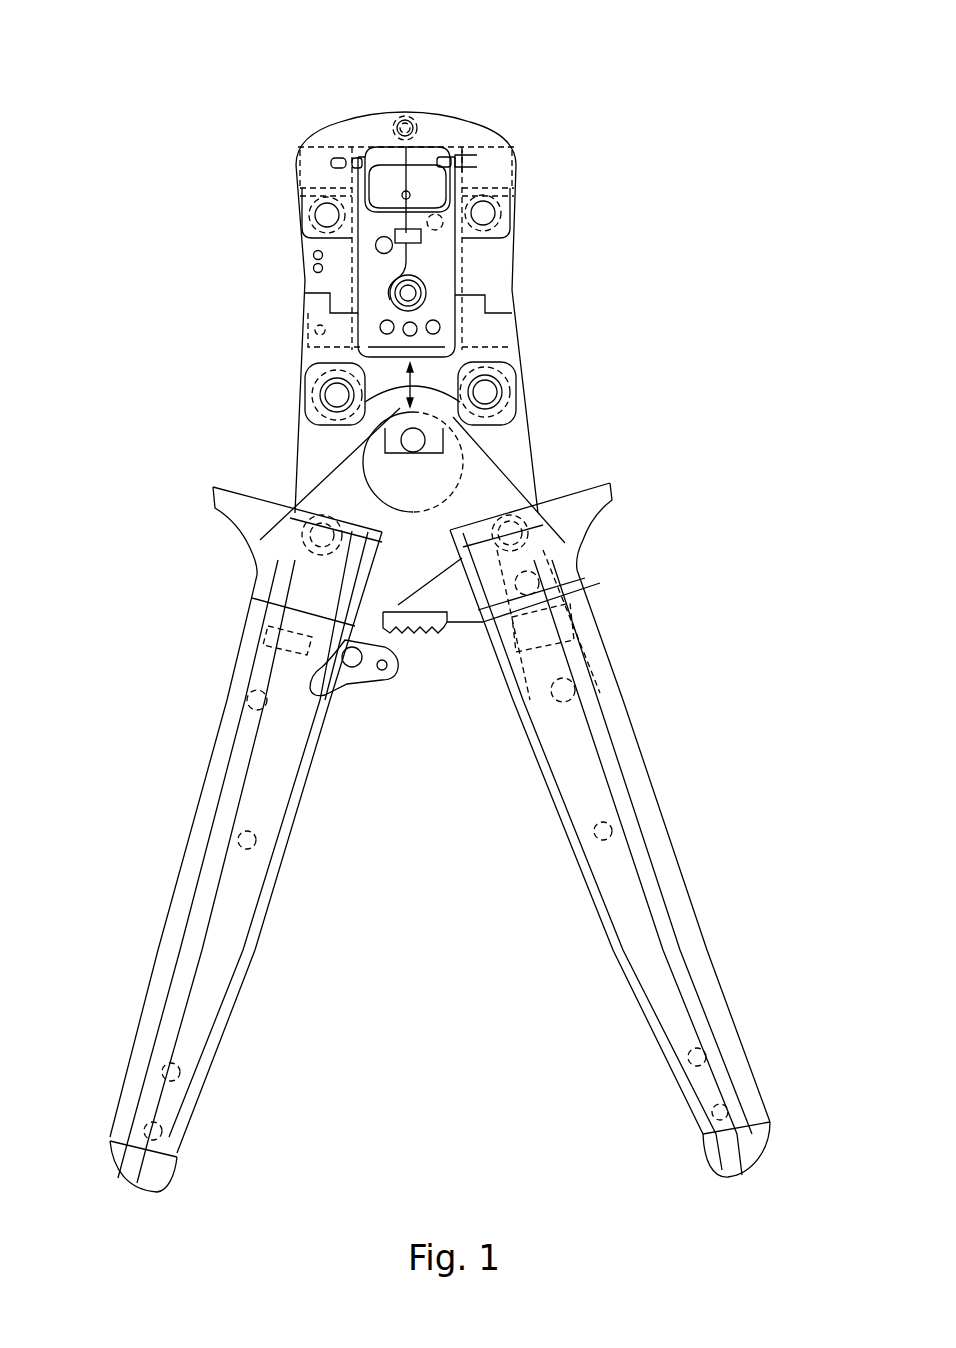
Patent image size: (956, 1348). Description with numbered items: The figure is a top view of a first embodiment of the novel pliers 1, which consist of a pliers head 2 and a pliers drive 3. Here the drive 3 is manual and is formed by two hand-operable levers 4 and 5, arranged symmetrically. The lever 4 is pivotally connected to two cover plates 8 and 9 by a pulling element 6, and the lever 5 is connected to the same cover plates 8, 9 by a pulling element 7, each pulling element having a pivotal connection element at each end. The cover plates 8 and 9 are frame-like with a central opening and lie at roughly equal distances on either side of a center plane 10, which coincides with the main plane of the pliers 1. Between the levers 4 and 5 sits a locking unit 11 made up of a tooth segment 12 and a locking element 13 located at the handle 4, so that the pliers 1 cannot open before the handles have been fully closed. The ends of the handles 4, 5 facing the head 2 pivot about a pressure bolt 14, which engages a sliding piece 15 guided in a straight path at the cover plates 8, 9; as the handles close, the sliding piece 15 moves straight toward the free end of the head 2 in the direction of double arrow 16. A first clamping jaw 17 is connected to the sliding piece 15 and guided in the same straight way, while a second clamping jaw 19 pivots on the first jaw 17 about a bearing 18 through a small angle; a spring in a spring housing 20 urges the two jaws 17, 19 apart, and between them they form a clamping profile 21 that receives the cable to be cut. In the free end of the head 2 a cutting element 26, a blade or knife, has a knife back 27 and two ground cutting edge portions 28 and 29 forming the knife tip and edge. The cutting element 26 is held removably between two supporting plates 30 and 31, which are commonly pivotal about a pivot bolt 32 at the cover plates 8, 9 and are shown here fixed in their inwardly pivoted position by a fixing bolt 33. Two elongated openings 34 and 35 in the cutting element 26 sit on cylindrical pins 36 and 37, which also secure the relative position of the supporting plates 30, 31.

The pliers 1 is at (655, 250).
The pliers head 2 is at (515, 237).
The pliers drive 3 is at (654, 762).
The lever 4 is at (171, 871).
The lever 5 is at (691, 884).
The pulling element 6 is at (315, 437).
The pulling element 7 is at (507, 445).
The cover plate 8 is at (318, 360).
The cover plate 9 is at (410, 330).
The center plane 10 is at (441, 600).
The locking unit 11 is at (413, 680).
The tooth segment 12 is at (413, 612).
The locking element 13 is at (367, 627).
The pressure bolt 14 is at (413, 440).
The sliding piece 15 is at (437, 428).
The double arrow 16 is at (420, 390).
The first clamping jaw 17 is at (370, 279).
The bearing 18 is at (408, 293).
The second clamping jaw 19 is at (436, 268).
The spring housing 20 is at (395, 240).
The clamping profile 21 is at (406, 195).
The cutting element 26 is at (382, 165).
The knife back 27 is at (407, 179).
The cutting edge portion 28 is at (320, 182).
The cutting edge portion 29 is at (406, 169).
The supporting plate 30 is at (477, 135).
The supporting plate 31 is at (444, 162).
The pivot bolt 32 is at (324, 212).
The fixing bolt 33 is at (406, 122).
The elongated opening 34 is at (350, 162).
The elongated opening 35 is at (458, 152).
The cylindrical pin 36 is at (336, 158).
The cylindrical pin 37 is at (480, 157).